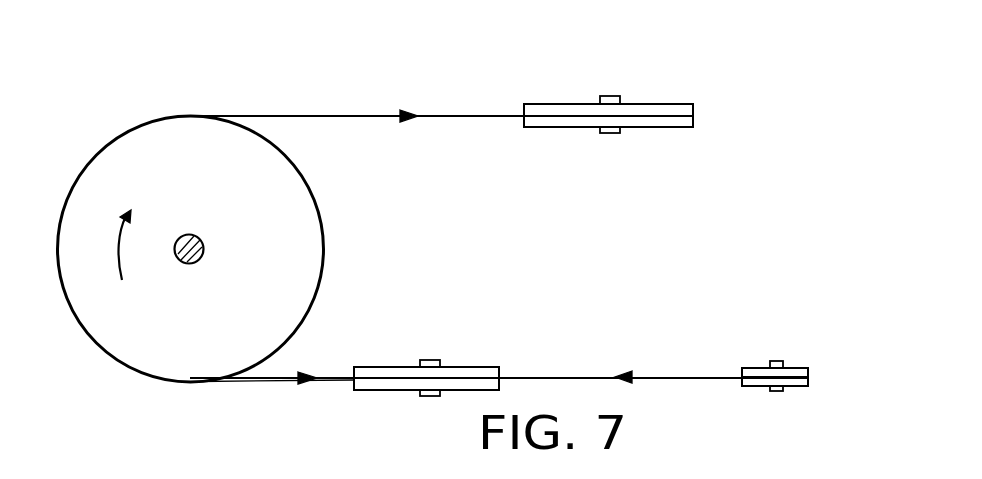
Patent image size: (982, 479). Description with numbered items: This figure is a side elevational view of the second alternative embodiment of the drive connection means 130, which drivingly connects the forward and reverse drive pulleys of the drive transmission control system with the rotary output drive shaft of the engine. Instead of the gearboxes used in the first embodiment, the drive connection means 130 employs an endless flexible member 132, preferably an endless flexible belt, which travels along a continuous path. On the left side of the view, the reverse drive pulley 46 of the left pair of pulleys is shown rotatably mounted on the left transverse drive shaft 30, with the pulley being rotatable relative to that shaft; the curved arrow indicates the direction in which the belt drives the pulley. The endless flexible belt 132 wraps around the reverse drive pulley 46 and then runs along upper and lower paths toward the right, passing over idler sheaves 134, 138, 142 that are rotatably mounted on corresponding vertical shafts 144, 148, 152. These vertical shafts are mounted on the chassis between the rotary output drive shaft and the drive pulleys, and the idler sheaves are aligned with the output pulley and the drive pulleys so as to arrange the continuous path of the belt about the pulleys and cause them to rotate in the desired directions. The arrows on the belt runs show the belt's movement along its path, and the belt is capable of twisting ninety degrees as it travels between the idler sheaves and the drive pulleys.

The left transverse drive shaft 30 is at (190, 238).
The reverse drive pulley 46 is at (313, 252).
The drive connection means 130 is at (723, 124).
The endless flexible member 132 is at (660, 375).
The idler sheave 134 is at (472, 367).
The idler sheave 138 is at (541, 104).
The idler sheave 142 is at (753, 366).
The vertical shaft 144 is at (427, 360).
The vertical shaft 148 is at (610, 133).
The vertical shaft 152 is at (777, 360).